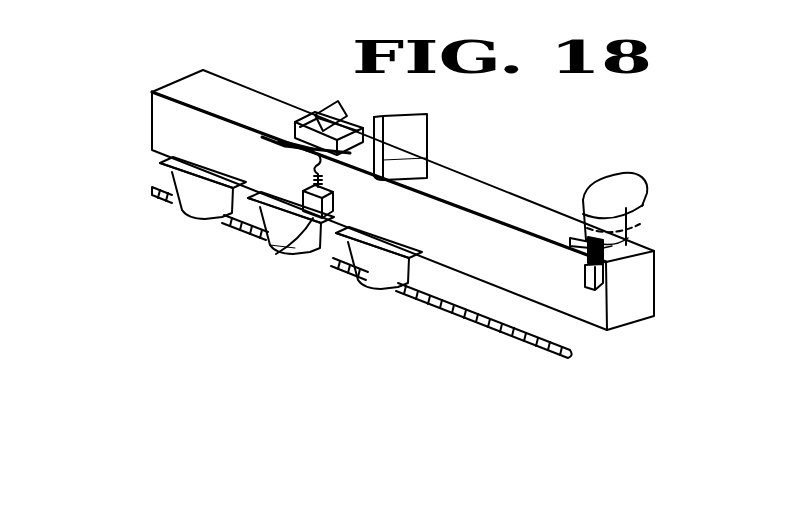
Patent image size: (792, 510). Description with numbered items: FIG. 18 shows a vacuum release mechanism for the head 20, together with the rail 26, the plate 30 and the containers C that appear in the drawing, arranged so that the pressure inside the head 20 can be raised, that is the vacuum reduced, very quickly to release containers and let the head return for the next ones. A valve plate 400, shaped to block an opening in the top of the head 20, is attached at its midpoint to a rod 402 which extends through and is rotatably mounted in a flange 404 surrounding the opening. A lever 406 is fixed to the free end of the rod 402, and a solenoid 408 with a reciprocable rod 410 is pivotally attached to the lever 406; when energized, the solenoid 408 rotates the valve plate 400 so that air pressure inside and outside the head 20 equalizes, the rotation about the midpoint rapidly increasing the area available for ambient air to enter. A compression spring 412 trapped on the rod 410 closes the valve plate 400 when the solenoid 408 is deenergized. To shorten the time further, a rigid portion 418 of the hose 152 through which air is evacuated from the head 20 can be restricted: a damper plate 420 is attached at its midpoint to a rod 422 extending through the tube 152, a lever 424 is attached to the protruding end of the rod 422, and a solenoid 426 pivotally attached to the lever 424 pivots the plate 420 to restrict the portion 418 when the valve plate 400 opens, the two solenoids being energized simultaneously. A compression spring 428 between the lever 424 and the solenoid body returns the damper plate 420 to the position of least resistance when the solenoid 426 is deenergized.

The head 20 is at (158, 137).
The rail 26 is at (457, 310).
The plate 30 is at (422, 131).
The hose 152 is at (632, 172).
The valve plate 400 is at (330, 110).
The rod 402 is at (350, 112).
The flange 404 is at (424, 153).
The lever 406 is at (272, 141).
The solenoid 408 is at (292, 247).
The reciprocable rod 410 is at (312, 172).
The compression spring 412 is at (330, 192).
The rigid portion 418 is at (584, 212).
The damper plate 420 is at (637, 212).
The rod 422 is at (571, 240).
The lever 424 is at (600, 244).
The solenoid 426 is at (606, 282).
The compression spring 428 is at (606, 262).
The bins C is at (372, 262).